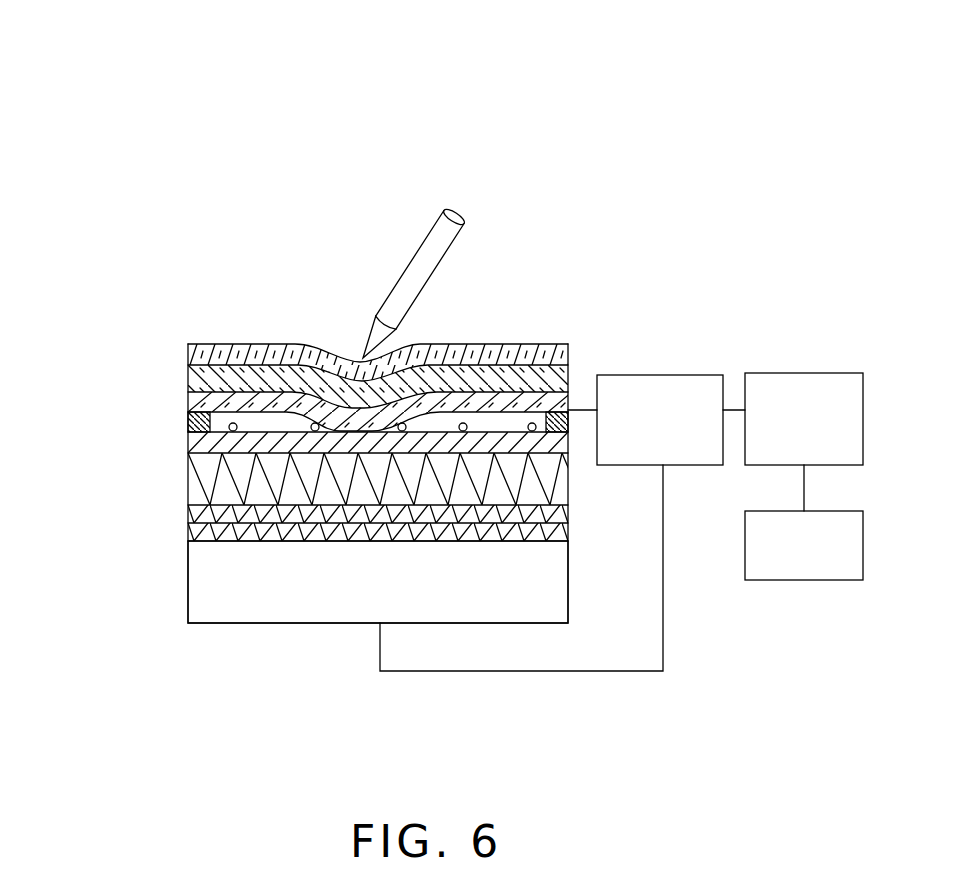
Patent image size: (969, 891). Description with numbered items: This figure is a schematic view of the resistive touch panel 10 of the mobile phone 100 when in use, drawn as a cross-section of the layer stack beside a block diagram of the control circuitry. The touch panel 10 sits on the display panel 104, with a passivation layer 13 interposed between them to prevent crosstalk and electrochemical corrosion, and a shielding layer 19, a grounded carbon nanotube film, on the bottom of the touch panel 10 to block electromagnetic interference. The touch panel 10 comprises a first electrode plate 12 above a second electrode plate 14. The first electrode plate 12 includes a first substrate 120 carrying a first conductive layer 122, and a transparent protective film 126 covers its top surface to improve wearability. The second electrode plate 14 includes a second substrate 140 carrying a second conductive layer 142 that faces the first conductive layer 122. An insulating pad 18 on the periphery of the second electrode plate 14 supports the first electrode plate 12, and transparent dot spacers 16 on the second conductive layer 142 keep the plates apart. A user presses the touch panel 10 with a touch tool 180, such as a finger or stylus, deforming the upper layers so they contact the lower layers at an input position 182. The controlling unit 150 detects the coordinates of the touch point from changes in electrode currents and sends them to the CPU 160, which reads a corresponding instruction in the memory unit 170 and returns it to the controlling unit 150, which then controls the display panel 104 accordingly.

The mobile phone 100 is at (452, 43).
The touch panel 10 is at (53, 352).
The first electrode plate 12 is at (101, 355).
The second electrode plate 14 is at (101, 437).
The transparent protective film 126 is at (188, 348).
The first substrate 120 is at (189, 378).
The first conductive layer 122 is at (189, 402).
The second conductive layer 142 is at (189, 443).
The second substrate 140 is at (189, 486).
The transparent dot spacers 16 is at (467, 418).
The insulating pad 18 is at (568, 430).
The shielding layer 19 is at (189, 514).
The passivation layer 13 is at (189, 532).
The display panel 104 is at (189, 578).
The touch tool 180 is at (428, 252).
The input position 182 is at (358, 356).
The controlling unit 150 is at (664, 375).
The CPU 160 is at (800, 373).
The memory unit 170 is at (793, 580).